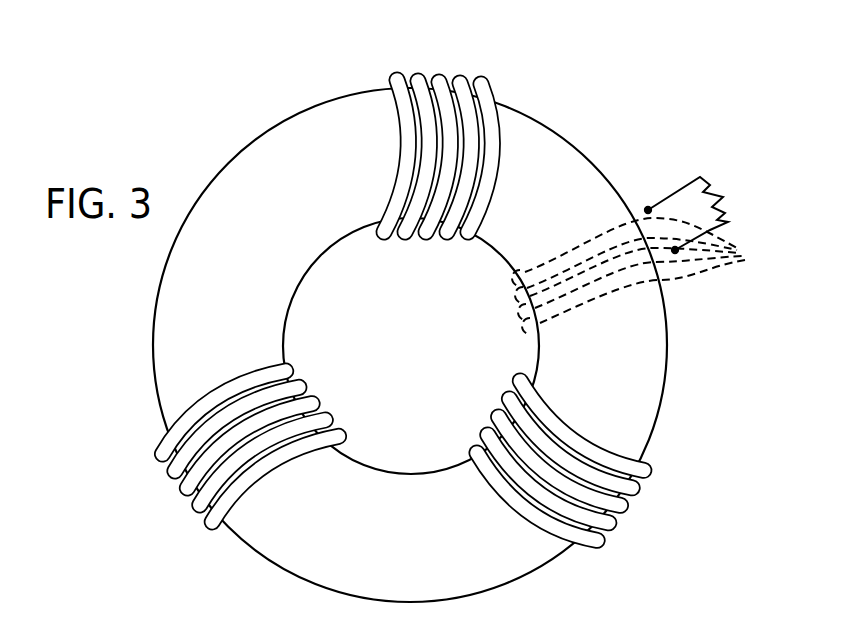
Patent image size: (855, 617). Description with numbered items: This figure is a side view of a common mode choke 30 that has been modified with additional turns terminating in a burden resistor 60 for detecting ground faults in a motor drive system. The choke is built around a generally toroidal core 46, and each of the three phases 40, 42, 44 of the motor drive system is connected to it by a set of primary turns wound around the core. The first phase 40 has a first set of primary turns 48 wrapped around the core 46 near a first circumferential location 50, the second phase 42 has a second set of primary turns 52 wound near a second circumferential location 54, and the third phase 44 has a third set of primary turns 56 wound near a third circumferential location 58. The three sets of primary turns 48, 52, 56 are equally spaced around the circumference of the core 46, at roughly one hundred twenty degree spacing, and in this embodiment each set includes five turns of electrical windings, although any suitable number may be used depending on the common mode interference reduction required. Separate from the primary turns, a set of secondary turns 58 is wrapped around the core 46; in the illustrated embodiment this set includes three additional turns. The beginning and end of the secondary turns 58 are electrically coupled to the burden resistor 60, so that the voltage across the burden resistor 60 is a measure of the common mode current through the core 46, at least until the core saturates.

The common mode choke 30 is at (433, 327).
The first phase 40 is at (462, 123).
The second phase 42 is at (586, 464).
The third phase 44 is at (216, 462).
The toroidal core 46 is at (410, 345).
The first set of primary turns 48 is at (488, 88).
The first circumferential location 50 is at (418, 261).
The second set of primary turns 52 is at (597, 545).
The second circumferential location 54 is at (487, 403).
The third set of primary turns 56 is at (210, 528).
The secondary turns 58 is at (738, 253).
The burden resistor 60 is at (723, 194).